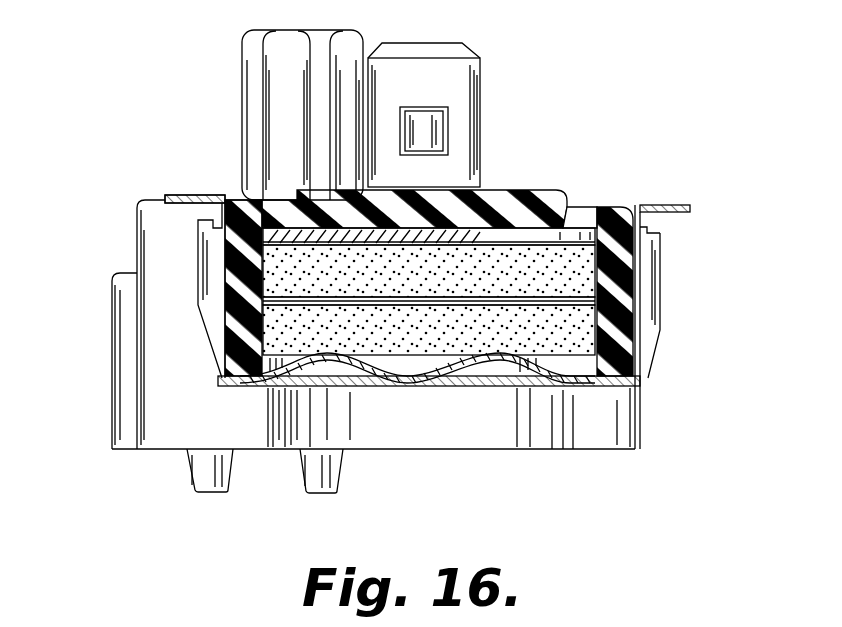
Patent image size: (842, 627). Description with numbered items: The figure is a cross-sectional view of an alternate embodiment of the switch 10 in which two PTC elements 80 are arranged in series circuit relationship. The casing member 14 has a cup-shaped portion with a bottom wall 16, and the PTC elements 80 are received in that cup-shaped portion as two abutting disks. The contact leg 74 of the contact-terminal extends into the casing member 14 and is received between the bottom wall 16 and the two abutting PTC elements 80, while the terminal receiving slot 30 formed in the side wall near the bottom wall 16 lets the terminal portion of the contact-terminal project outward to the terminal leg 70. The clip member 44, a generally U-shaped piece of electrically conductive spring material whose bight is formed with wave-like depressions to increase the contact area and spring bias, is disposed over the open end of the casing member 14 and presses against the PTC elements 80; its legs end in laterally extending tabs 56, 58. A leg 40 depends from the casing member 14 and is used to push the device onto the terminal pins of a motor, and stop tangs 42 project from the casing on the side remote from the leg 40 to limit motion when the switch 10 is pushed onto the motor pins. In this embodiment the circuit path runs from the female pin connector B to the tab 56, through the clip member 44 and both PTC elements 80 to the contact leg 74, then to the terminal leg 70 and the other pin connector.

The switch 10 is at (97, 416).
The leg 40 is at (273, 78).
The terminal leg 70 is at (426, 60).
The bottom wall 16 is at (470, 198).
The terminal receiving slot 30 is at (575, 206).
The casing member 14 is at (610, 205).
The laterally extending tab 58 is at (670, 213).
The laterally extending tab 56 is at (200, 208).
The female pin connector B is at (206, 195).
The contact leg 74 is at (405, 238).
The PTC element 80 is at (480, 288).
The clip member 44 is at (410, 386).
The stop tangs 42 is at (303, 488).